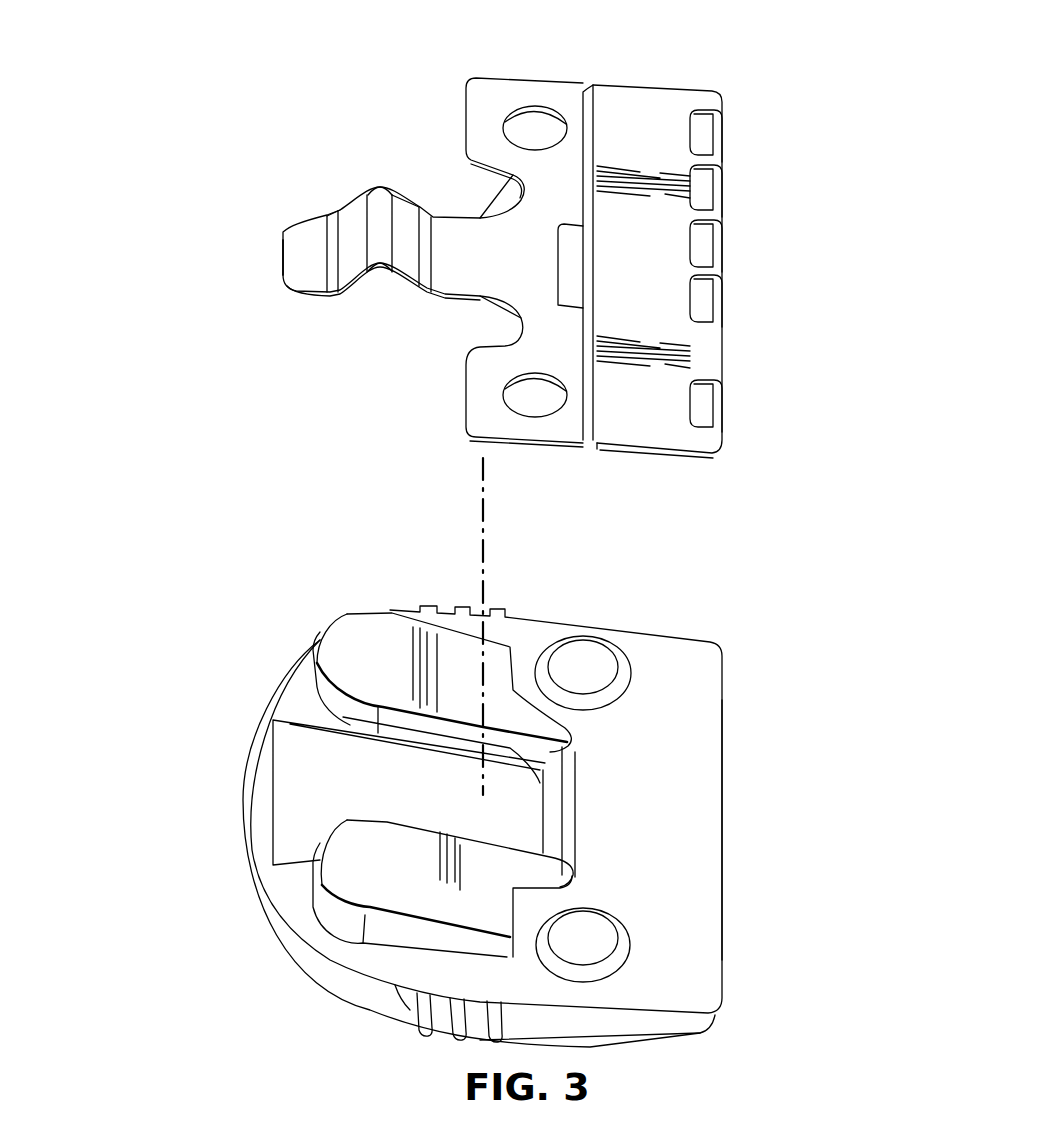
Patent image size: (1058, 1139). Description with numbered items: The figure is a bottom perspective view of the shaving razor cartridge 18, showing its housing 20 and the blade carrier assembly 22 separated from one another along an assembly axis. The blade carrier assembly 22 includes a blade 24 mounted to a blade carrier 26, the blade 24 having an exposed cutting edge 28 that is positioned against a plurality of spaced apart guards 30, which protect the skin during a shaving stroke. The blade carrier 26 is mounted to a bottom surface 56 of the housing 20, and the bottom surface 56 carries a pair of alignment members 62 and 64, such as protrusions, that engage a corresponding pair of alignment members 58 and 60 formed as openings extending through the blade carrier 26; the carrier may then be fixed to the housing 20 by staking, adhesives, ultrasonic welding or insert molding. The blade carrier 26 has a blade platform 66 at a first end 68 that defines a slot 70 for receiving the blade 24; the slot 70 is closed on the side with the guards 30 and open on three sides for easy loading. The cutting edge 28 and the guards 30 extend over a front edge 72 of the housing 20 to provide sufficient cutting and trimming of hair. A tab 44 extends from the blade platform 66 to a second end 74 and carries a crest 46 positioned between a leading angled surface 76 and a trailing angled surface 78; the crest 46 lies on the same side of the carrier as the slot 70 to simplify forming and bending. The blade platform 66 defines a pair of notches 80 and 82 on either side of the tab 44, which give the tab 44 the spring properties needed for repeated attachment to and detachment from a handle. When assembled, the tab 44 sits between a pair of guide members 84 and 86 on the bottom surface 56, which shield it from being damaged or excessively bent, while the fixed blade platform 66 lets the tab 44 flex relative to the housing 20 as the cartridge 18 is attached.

The shaving razor cartridge 18 is at (265, 318).
The housing 20 is at (469, 800).
The blade carrier assembly 22 is at (501, 257).
The blade 24 is at (590, 86).
The blade carrier 26 is at (712, 458).
The cutting edge 28 is at (722, 300).
The spaced apart guards 30 is at (722, 382).
The tab 44 is at (370, 290).
The crest 46 is at (378, 198).
The bottom surface 56 is at (672, 648).
The alignment member 58 is at (537, 125).
The alignment member 60 is at (520, 398).
The alignment member 62 is at (585, 665).
The alignment member 64 is at (600, 930).
The blade platform 66 is at (478, 418).
The first end 68 is at (722, 140).
The slot 70 is at (628, 452).
The front edge 72 is at (722, 850).
The second end 74 is at (283, 252).
The leading angled surface 76 is at (350, 215).
The trailing angled surface 78 is at (405, 215).
The notch 80 is at (490, 196).
The notch 82 is at (475, 318).
The guide member 84 is at (350, 625).
The guide member 86 is at (355, 830).